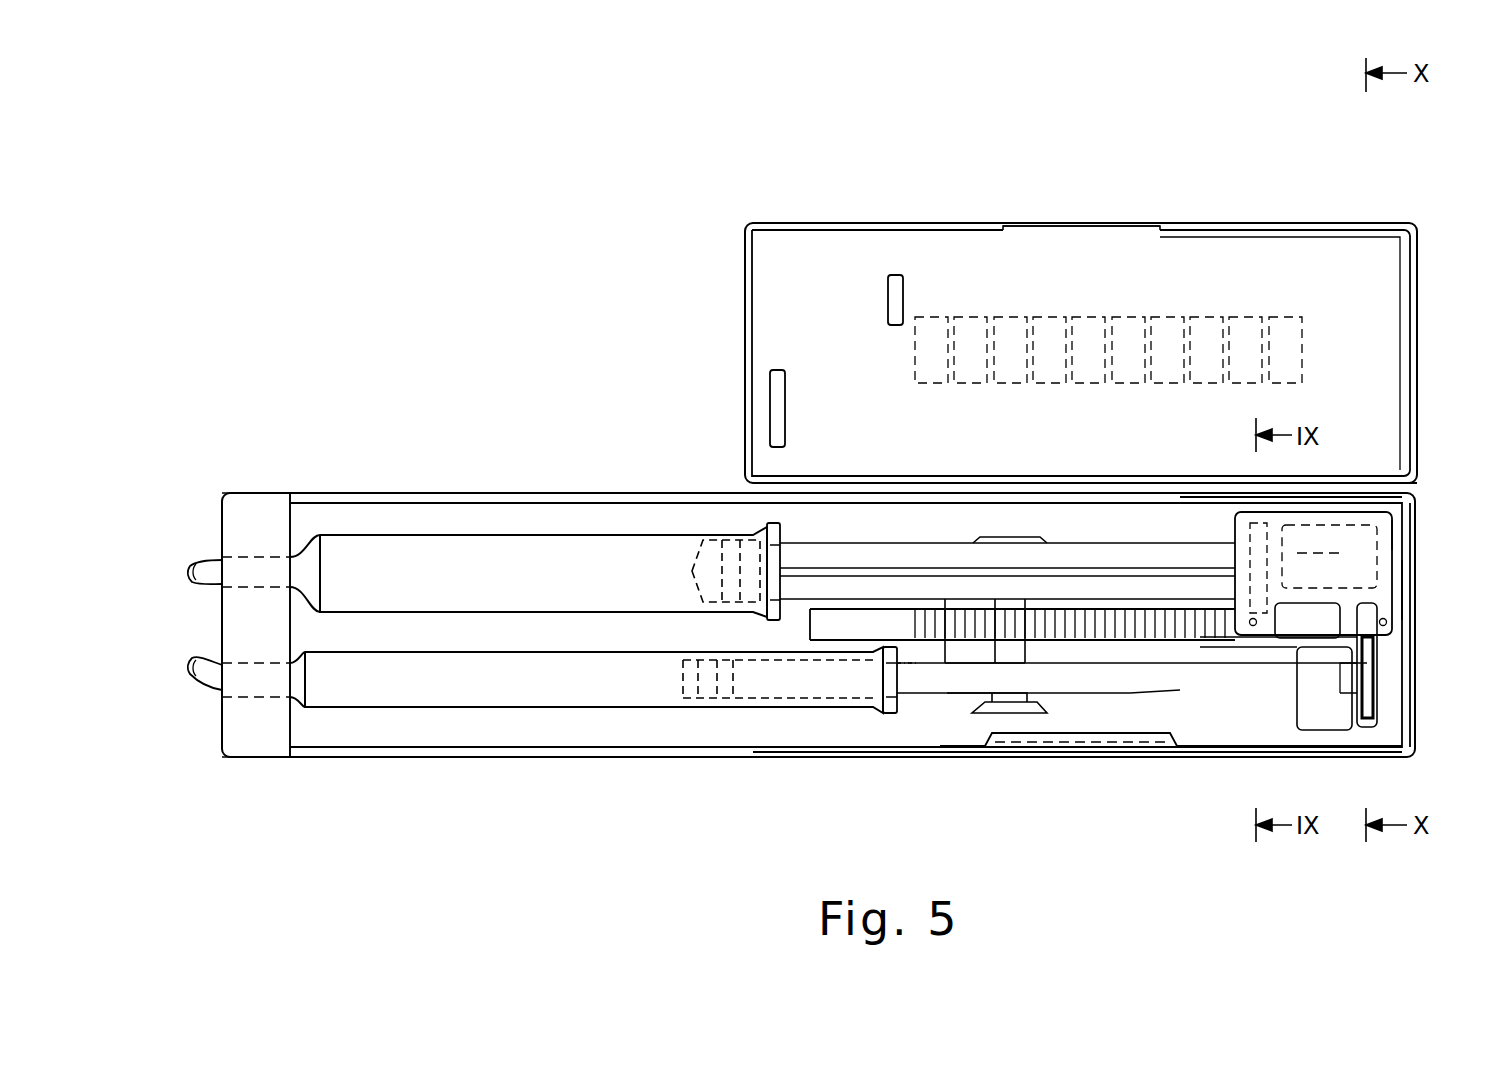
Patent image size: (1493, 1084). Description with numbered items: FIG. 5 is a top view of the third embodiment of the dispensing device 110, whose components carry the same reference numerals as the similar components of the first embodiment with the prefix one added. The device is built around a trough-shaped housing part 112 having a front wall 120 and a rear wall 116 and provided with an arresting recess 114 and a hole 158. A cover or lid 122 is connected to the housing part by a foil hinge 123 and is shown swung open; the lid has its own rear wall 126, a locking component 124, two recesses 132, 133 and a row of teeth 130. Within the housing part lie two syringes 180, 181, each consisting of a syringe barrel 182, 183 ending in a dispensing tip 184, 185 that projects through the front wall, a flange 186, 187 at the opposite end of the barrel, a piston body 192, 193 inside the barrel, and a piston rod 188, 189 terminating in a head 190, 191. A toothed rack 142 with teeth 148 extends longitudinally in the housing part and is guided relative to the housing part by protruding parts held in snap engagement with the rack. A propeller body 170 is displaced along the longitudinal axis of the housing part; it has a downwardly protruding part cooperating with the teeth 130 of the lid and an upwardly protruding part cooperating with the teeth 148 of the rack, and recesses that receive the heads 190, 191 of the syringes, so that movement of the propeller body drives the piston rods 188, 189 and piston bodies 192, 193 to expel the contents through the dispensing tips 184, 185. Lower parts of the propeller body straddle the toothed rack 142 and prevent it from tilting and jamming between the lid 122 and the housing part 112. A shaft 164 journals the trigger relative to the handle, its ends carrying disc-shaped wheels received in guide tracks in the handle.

The third embodiment of dispensing device 110 is at (532, 395).
The trough-shaped housing part 112 is at (620, 730).
The arresting recess 114 is at (1085, 746).
The rear wall 116 is at (1408, 592).
The front wall 120 is at (291, 723).
The cover or lid 122 is at (1331, 255).
The foil hinge 123 is at (1370, 490).
The locking component 124 is at (1076, 224).
The rear wall 126 is at (1407, 262).
The teeth 130 is at (1205, 318).
The recess 132 is at (896, 283).
The recess 133 is at (775, 412).
The toothed rack 142 is at (835, 625).
The teeth 148 is at (1140, 625).
The hole 158 is at (1187, 650).
The shaft 164 is at (1033, 700).
The propeller body 170 is at (1390, 567).
The syringe 180 is at (728, 525).
The syringe 181 is at (794, 751).
The syringe barrel 182 is at (588, 555).
The syringe barrel 183 is at (434, 692).
The dispensing tip 184 is at (203, 570).
The dispensing tip 185 is at (208, 680).
The flange 186 is at (762, 544).
The flange 187 is at (898, 690).
The piston rod 188 is at (918, 540).
The piston rod 189 is at (965, 685).
The head 190 is at (1398, 532).
The head 191 is at (1368, 680).
The piston body 192 is at (694, 560).
The piston body 193 is at (680, 690).